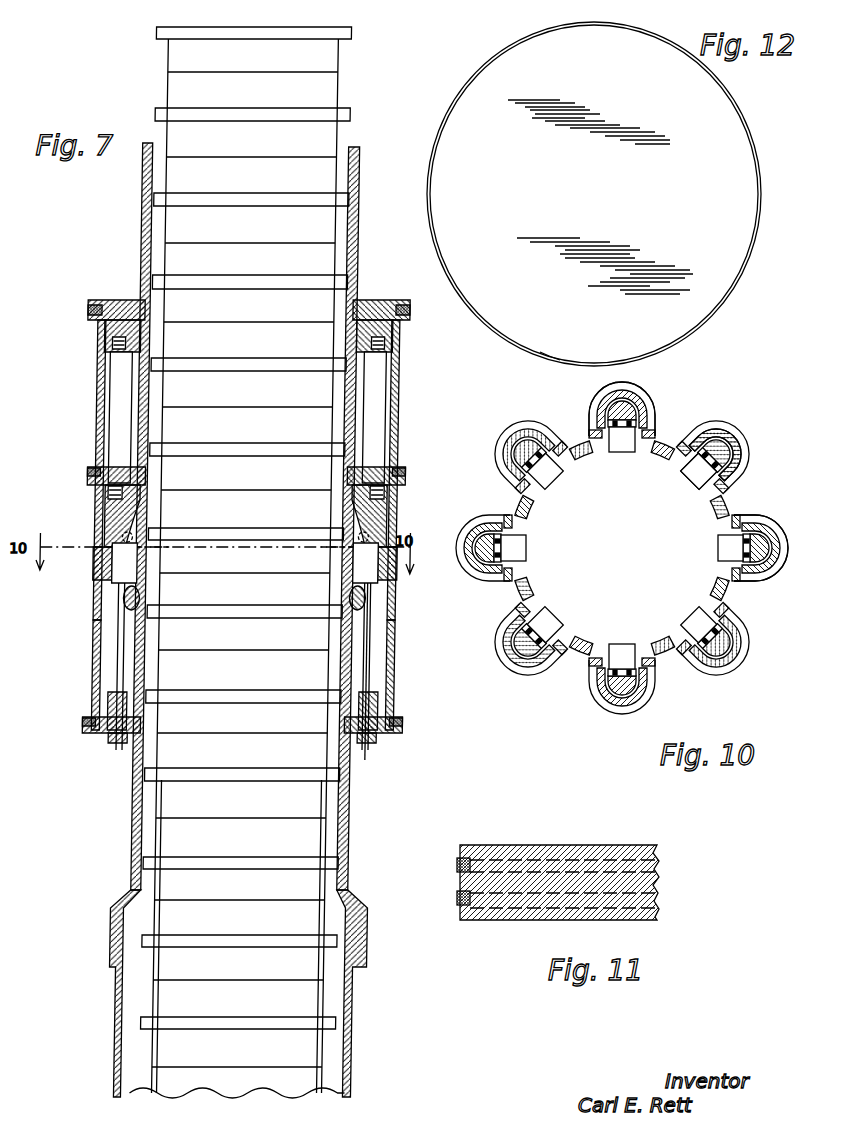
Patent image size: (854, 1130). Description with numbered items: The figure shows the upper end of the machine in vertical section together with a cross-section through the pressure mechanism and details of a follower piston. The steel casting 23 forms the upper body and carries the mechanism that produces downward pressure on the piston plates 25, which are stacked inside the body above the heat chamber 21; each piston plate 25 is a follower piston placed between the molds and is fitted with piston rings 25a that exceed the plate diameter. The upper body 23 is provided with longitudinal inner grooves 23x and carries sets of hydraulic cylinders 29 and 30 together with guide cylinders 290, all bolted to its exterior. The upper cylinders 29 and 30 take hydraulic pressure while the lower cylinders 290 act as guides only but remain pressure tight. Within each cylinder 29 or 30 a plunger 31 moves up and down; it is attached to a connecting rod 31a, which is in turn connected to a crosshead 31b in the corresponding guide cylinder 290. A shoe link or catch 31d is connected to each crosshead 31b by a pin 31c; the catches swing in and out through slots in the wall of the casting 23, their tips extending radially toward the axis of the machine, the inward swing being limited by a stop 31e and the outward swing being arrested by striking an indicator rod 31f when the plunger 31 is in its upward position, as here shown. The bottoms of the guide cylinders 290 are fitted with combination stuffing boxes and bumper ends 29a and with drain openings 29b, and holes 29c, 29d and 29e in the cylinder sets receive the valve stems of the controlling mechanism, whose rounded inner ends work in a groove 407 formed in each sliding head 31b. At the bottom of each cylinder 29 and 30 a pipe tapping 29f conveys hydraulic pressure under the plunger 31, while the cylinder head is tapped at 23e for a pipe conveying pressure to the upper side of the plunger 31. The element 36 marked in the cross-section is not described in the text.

In FIG. 7, the heat chamber 21 is at (132, 1022).
In FIG. 7, the upper body casting 23 is at (363, 237).
In FIG. 7, the hydraulic pressure pipe tapping 23e is at (96, 310).
In FIG. 10, the longitudinal inner grooves 23x is at (588, 448).
In FIG. 7, the piston plate 25 is at (258, 105).
In FIG. 12, the piston plate 25 is at (594, 194).
In FIG. 11, the piston plate 25 is at (578, 846).
In FIG. 12, the piston rings 25a is at (548, 356).
In FIG. 11, the piston rings 25a is at (457, 896).
In FIG. 7, the hydraulic cylinder 29 is at (104, 431).
In FIG. 10, the hydraulic cylinder 29 is at (653, 410).
In FIG. 7, the combination stuffing box and bumper end 29a is at (128, 745).
In FIG. 7, the drain openings 29b is at (96, 725).
In FIG. 7, the hole 29c is at (104, 661).
In FIG. 7, the hole 29d is at (105, 582).
In FIG. 7, the hole 29e is at (104, 549).
In FIG. 10, the hole 29e is at (628, 392).
In FIG. 7, the pipe tapping 29f is at (100, 474).
In FIG. 7, the guide cylinder 290 is at (120, 692).
In FIG. 10, the hydraulic cylinder 30 is at (538, 425).
In FIG. 7, the plunger 31 is at (111, 341).
In FIG. 7, the connecting rod 31a is at (126, 398).
In FIG. 10, the connecting rod 31a is at (572, 520).
In FIG. 7, the crosshead 31b is at (113, 516).
In FIG. 10, the crosshead 31b is at (605, 420).
In FIG. 7, the pin 31c is at (142, 548).
In FIG. 10, the pin 31c is at (518, 472).
In FIG. 7, the shoe link or catch 31d is at (150, 598).
In FIG. 10, the shoe link or catch 31d is at (688, 492).
In FIG. 7, the stop 31e is at (140, 536).
In FIG. 7, the indicator rod 31f is at (378, 752).
In FIG. 10, the packing 36 is at (736, 476).
In FIG. 10, the groove 407 is at (732, 447).